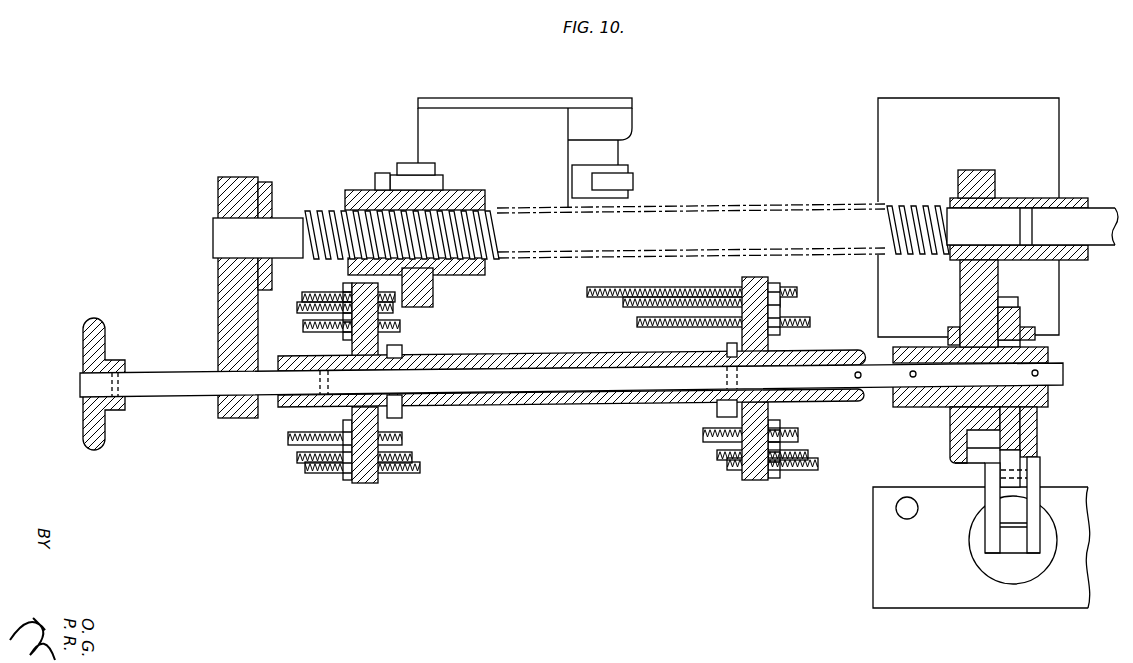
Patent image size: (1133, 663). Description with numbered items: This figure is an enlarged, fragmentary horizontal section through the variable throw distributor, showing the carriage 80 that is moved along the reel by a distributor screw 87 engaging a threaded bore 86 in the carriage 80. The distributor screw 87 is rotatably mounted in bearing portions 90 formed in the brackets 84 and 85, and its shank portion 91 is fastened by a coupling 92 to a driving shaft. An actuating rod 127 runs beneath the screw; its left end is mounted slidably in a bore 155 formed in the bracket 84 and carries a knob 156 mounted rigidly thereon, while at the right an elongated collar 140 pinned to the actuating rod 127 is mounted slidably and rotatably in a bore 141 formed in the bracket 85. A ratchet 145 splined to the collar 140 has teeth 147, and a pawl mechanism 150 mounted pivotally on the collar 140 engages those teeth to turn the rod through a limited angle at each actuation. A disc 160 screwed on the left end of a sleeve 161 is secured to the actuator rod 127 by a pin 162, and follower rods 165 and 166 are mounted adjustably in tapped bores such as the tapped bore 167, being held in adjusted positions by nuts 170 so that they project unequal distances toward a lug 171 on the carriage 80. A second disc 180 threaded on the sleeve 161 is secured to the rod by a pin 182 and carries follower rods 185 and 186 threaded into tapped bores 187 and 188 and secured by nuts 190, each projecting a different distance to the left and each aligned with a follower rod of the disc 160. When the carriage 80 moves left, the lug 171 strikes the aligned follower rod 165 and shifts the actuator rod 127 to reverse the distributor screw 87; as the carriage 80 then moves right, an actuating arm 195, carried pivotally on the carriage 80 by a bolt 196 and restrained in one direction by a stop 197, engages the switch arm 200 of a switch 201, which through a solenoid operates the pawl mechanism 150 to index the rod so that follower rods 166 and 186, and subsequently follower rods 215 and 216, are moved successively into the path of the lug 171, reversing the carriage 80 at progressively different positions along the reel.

The carriage 80 is at (485, 272).
The bracket 84 is at (240, 415).
The bracket 85 is at (965, 290).
The threaded bore 86 is at (460, 205).
The distributor screw 87 is at (330, 215).
The bearing portions 90 is at (235, 250).
The shank portion 91 is at (967, 245).
The coupling 92 is at (1060, 198).
The actuating rod 127 is at (590, 390).
The elongated collar 140 is at (912, 410).
The bore 141 is at (958, 410).
The ratchet 145 is at (1010, 320).
The ratchet teeth 147 is at (1010, 305).
The pawl mechanism 150 is at (1035, 465).
The bore 155 is at (232, 395).
The knob 156 is at (90, 338).
The disc 160 is at (370, 480).
The sleeve 161 is at (490, 397).
The pin 162 is at (400, 415).
The follower rod 165 is at (392, 305).
The follower rod 166 is at (395, 322).
The tapped bore 167 is at (348, 345).
The nuts 170 is at (350, 290).
The lug 171 is at (432, 290).
The disc 180 is at (772, 420).
The pin 182 is at (727, 350).
The follower rod 185 is at (675, 295).
The follower rod 186 is at (630, 305).
The tapped bore 187 is at (755, 290).
The tapped bore 188 is at (755, 475).
The nuts 190 is at (790, 292).
The actuating arm 195 is at (440, 178).
The bolt 196 is at (415, 165).
The stop 197 is at (380, 180).
The switch arm 200 is at (632, 182).
The switch 201 is at (590, 110).
The follower rod 215 is at (405, 352).
The follower rod 216 is at (640, 327).